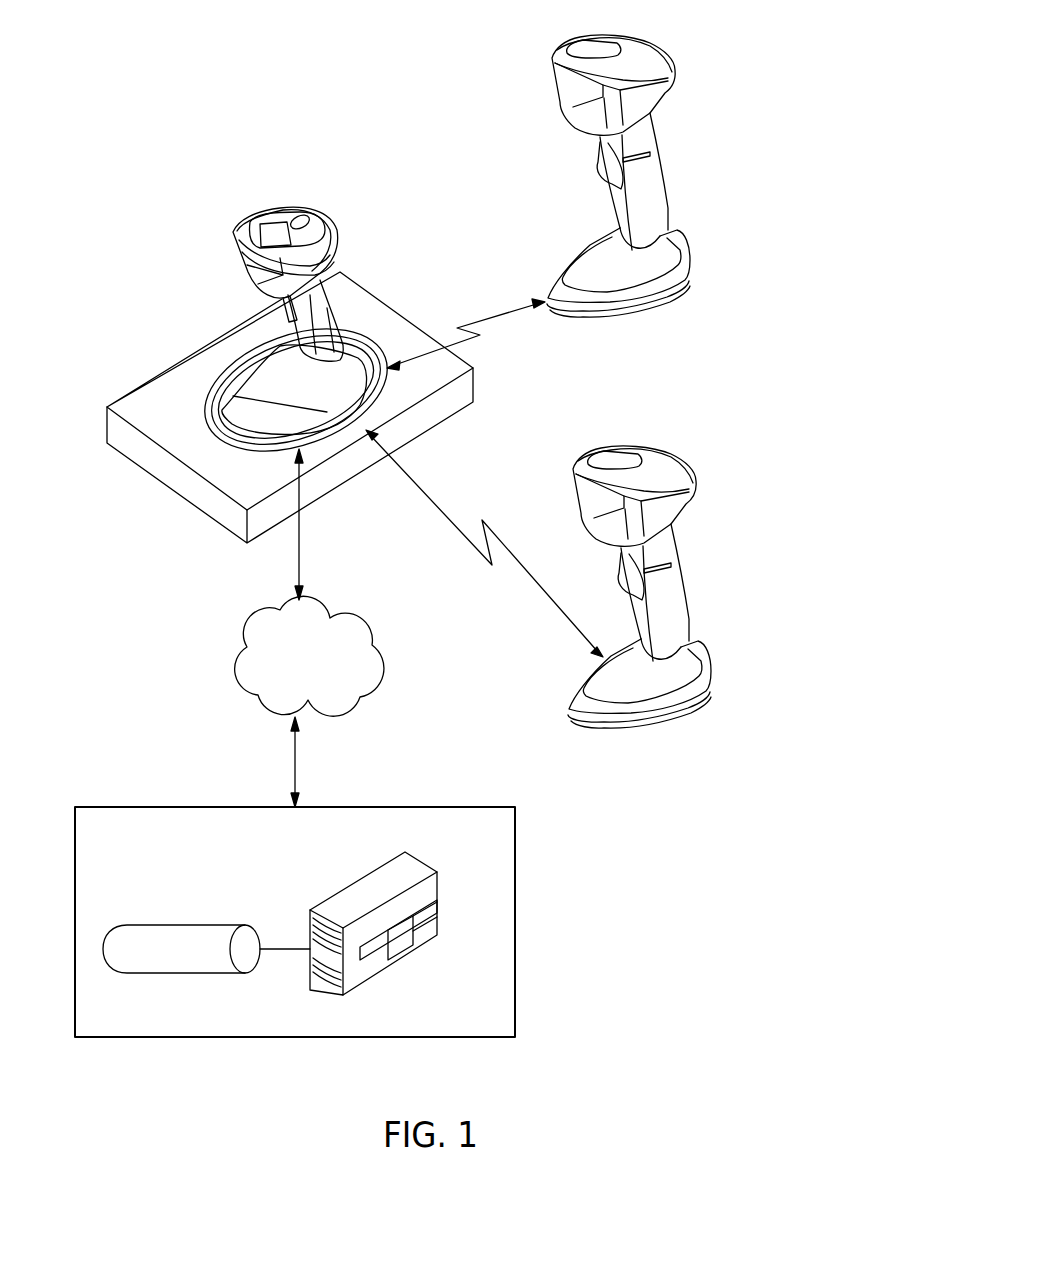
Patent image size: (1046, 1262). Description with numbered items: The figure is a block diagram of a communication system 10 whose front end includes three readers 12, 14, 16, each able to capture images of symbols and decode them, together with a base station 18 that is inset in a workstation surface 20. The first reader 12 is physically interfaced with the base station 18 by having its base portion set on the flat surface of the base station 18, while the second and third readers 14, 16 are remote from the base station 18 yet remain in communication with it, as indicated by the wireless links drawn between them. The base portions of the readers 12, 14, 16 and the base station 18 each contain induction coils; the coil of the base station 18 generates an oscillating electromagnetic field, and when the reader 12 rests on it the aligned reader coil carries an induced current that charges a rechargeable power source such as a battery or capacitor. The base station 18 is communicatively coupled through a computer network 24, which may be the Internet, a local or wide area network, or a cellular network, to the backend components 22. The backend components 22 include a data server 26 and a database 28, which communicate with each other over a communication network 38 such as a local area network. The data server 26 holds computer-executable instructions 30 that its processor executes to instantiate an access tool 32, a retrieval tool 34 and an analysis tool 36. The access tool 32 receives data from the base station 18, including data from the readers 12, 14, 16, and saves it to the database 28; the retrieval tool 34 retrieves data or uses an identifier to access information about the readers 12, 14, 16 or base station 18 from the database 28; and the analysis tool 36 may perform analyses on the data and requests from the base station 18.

The communication system 10 is at (192, 153).
The first reader 12 is at (331, 220).
The second reader 14 is at (668, 53).
The third reader 16 is at (689, 465).
The base station 18 is at (297, 438).
The workstation surface 20 is at (383, 310).
The backend components 22 is at (75, 920).
The computer network 24 is at (336, 600).
The data server 26 is at (396, 915).
The database 28 is at (181, 925).
The computer-executable instructions 30 is at (405, 942).
The access tool 32 is at (437, 908).
The retrieval tool 34 is at (430, 940).
The analysis tool 36 is at (373, 955).
The communication network 38 is at (281, 947).